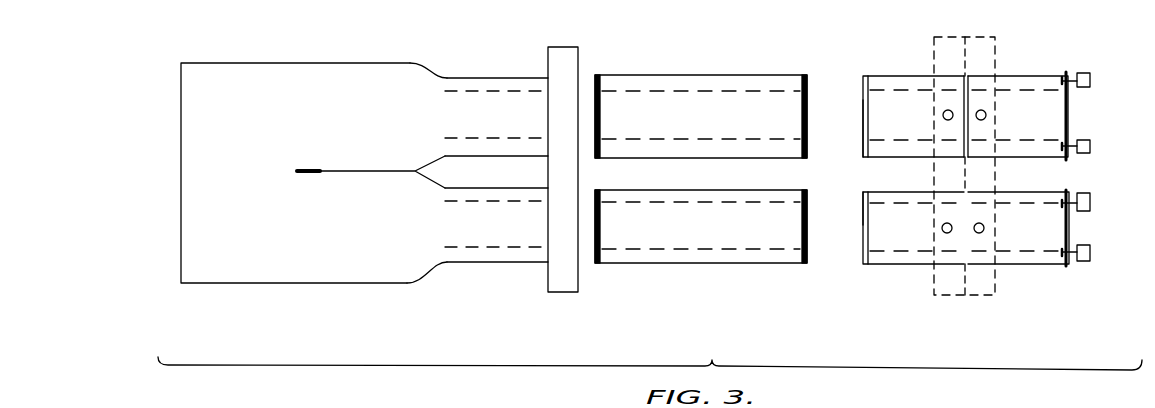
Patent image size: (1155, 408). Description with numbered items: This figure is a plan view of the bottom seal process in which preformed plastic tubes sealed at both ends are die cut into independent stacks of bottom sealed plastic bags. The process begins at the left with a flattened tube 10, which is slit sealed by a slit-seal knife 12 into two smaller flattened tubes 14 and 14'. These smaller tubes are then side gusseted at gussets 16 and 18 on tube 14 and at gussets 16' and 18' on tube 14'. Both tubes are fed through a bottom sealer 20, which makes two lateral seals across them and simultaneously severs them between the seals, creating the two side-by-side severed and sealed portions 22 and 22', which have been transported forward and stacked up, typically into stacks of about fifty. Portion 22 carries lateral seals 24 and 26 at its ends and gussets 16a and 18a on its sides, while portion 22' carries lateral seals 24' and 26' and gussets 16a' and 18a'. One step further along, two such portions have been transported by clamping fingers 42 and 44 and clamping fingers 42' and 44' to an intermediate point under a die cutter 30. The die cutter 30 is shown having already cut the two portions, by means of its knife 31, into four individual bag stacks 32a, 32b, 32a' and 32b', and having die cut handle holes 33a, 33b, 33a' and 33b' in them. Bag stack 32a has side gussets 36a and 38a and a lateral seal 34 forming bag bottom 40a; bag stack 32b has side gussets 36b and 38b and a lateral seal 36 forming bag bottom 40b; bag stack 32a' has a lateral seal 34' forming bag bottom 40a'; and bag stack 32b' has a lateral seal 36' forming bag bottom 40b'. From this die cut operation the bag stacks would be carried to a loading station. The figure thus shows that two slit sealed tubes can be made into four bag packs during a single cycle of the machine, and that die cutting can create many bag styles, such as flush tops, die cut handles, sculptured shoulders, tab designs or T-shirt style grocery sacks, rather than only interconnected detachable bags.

The flattened tube 10 is at (232, 85).
The slit-seal knife 12 is at (308, 167).
The smaller flattened tube 14 is at (411, 56).
The smaller flattened tube 14' is at (402, 292).
The side gusset 16 is at (496, 61).
The side gusset 18 is at (496, 93).
The side gusset 16' is at (496, 255).
The side gusset 18' is at (496, 284).
The bottom sealer 20 is at (567, 60).
The severed and sealed portion 22 is at (701, 97).
The lateral seal 24 is at (618, 100).
The lateral seal 26 is at (787, 97).
The gusset 16a is at (701, 64).
The gusset 18a is at (701, 162).
The severed and sealed portion 22' is at (701, 252).
The lateral seal 24' is at (616, 252).
The lateral seal 26' is at (796, 252).
The gusset 16a' is at (701, 182).
The gusset 18a' is at (701, 282).
The die cutter 30 is at (941, 50).
The knife 31 is at (969, 50).
The bag stack 32a is at (905, 96).
The bag stack 32b is at (1034, 95).
The lateral seal 34 is at (845, 110).
The side gusset 36a is at (918, 82).
The side gusset 36b is at (1025, 82).
The side gusset 38a is at (892, 153).
The side gusset 38b is at (1043, 148).
The bag bottom 40a is at (838, 131).
The bag bottom 40b is at (1102, 113).
The handle hole 33a is at (920, 115).
The handle hole 33b is at (1006, 115).
The lateral seal 36 is at (1098, 113).
The clamping finger 42 is at (1096, 66).
The clamping finger 44 is at (1096, 148).
The bag stack 32a' is at (913, 262).
The bag stack 32b' is at (1038, 249).
The lateral seal 34' is at (844, 232).
The bag bottom 40a' is at (838, 214).
The bag bottom 40b' is at (1006, 228).
The handle hole 33a' is at (973, 277).
The handle hole 33b' is at (1013, 277).
The lateral seal 36' is at (1000, 228).
The clamping finger 42' is at (1096, 195).
The clamping finger 44' is at (1096, 260).